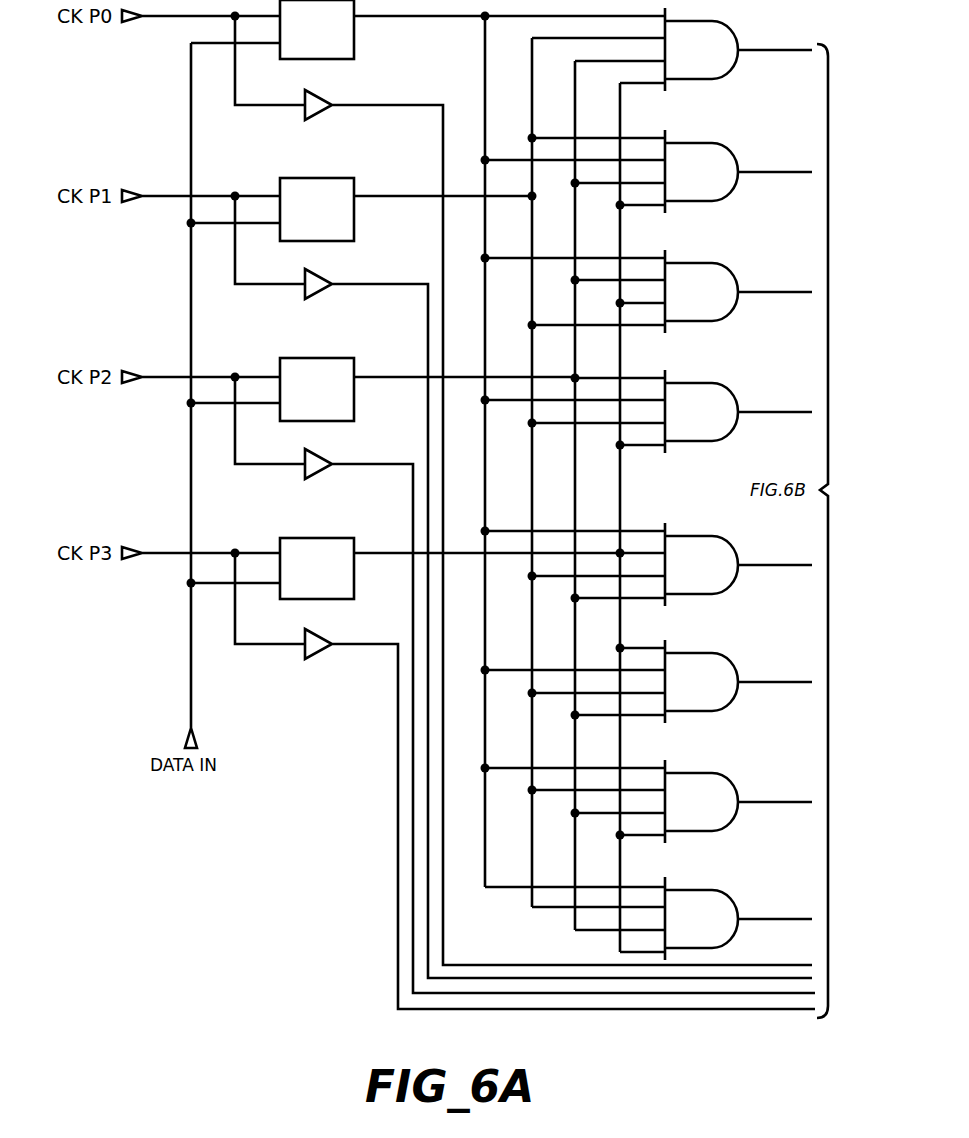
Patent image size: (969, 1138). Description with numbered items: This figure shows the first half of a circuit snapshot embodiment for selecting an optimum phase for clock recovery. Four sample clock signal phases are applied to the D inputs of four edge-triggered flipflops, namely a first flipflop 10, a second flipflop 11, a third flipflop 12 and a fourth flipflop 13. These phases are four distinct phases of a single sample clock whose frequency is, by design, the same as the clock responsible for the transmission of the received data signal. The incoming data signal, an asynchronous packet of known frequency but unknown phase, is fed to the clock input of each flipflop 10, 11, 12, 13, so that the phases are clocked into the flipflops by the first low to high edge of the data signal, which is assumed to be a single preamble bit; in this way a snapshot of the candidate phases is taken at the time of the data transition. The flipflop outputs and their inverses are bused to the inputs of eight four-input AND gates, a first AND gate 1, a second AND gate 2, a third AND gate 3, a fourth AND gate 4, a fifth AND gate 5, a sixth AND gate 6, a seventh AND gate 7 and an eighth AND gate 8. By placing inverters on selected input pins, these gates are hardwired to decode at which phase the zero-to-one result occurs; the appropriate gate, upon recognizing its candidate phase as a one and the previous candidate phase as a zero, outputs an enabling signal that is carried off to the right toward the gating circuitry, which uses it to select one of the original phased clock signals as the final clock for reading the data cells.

The edge-triggered flipflop FF10 10 is at (464, 31).
The edge-triggered flipflop FF11 11 is at (397, 208).
The edge-triggered flipflop FF12 12 is at (464, 388).
The edge-triggered flipflop FF13 13 is at (464, 567).
The AND gate AND1 1 is at (672, 45).
The AND gate AND2 2 is at (648, 167).
The AND gate AND3 3 is at (648, 287).
The AND gate AND4 4 is at (648, 407).
The AND gate AND5 5 is at (648, 560).
The AND gate AND6 6 is at (648, 677).
The AND gate AND7 7 is at (648, 797).
The AND gate AND8 8 is at (648, 914).